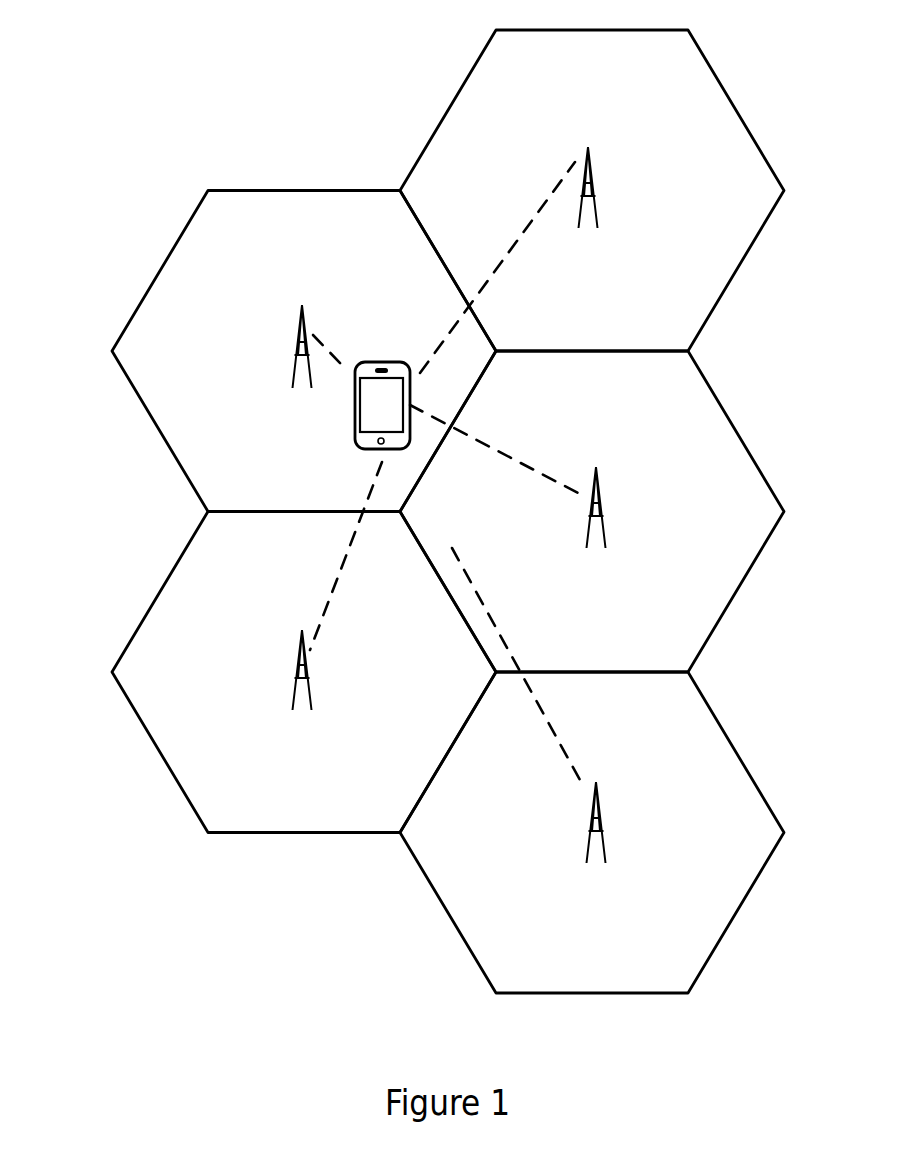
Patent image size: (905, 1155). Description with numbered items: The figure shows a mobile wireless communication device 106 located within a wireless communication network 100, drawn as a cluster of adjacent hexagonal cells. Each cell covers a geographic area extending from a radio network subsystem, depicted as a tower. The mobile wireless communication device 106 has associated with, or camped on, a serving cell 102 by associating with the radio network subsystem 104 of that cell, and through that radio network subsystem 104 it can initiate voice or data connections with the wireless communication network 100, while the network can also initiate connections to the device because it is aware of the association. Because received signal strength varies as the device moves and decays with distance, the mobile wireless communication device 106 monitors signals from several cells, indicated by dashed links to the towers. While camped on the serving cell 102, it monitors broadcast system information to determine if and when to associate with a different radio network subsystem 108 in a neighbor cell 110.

The wireless communication network 100 is at (104, 66).
The serving cell 102 is at (187, 226).
The radio network subsystem 104 is at (313, 324).
The mobile wireless communication device 106 is at (355, 407).
The radio network subsystem 108 is at (610, 483).
The neighbor cell 110 is at (722, 400).